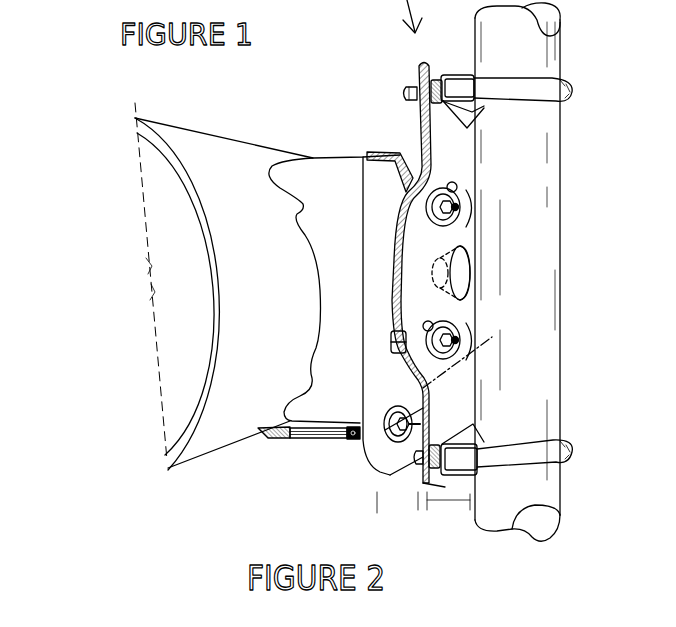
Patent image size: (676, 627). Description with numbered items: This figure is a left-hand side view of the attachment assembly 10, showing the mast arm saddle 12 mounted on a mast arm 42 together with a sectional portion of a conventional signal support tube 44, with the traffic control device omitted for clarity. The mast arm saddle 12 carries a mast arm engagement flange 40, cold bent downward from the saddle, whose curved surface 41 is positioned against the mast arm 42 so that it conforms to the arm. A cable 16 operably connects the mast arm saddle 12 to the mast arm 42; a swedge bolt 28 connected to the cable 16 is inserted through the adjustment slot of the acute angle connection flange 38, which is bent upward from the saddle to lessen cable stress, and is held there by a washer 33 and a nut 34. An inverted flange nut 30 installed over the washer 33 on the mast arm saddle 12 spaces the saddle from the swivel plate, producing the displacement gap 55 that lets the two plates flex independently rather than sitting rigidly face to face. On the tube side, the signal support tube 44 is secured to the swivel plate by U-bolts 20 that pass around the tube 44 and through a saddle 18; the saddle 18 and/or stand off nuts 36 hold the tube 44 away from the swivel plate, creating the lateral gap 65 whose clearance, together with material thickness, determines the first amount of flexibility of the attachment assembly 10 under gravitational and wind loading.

The attachment assembly 10 is at (78, 238).
The mast arm saddle 12 is at (358, 128).
The cable 16 is at (275, 440).
The saddle 18 is at (462, 445).
The U-bolts 20 is at (568, 448).
The swedge bolt 28 is at (322, 435).
The inverted flange nut 30 is at (390, 341).
The washer 33 is at (392, 416).
The nut 34 is at (395, 424).
The stand off nuts 36 is at (438, 75).
The acute angle connection flange 38 is at (378, 468).
The mast arm engagement flange 40 is at (318, 302).
The curved surface 41 is at (312, 341).
The mast arm 42 is at (218, 337).
The signal support tube 44 is at (534, 278).
The displacement gap 55 is at (397, 502).
The gap 65 is at (448, 502).